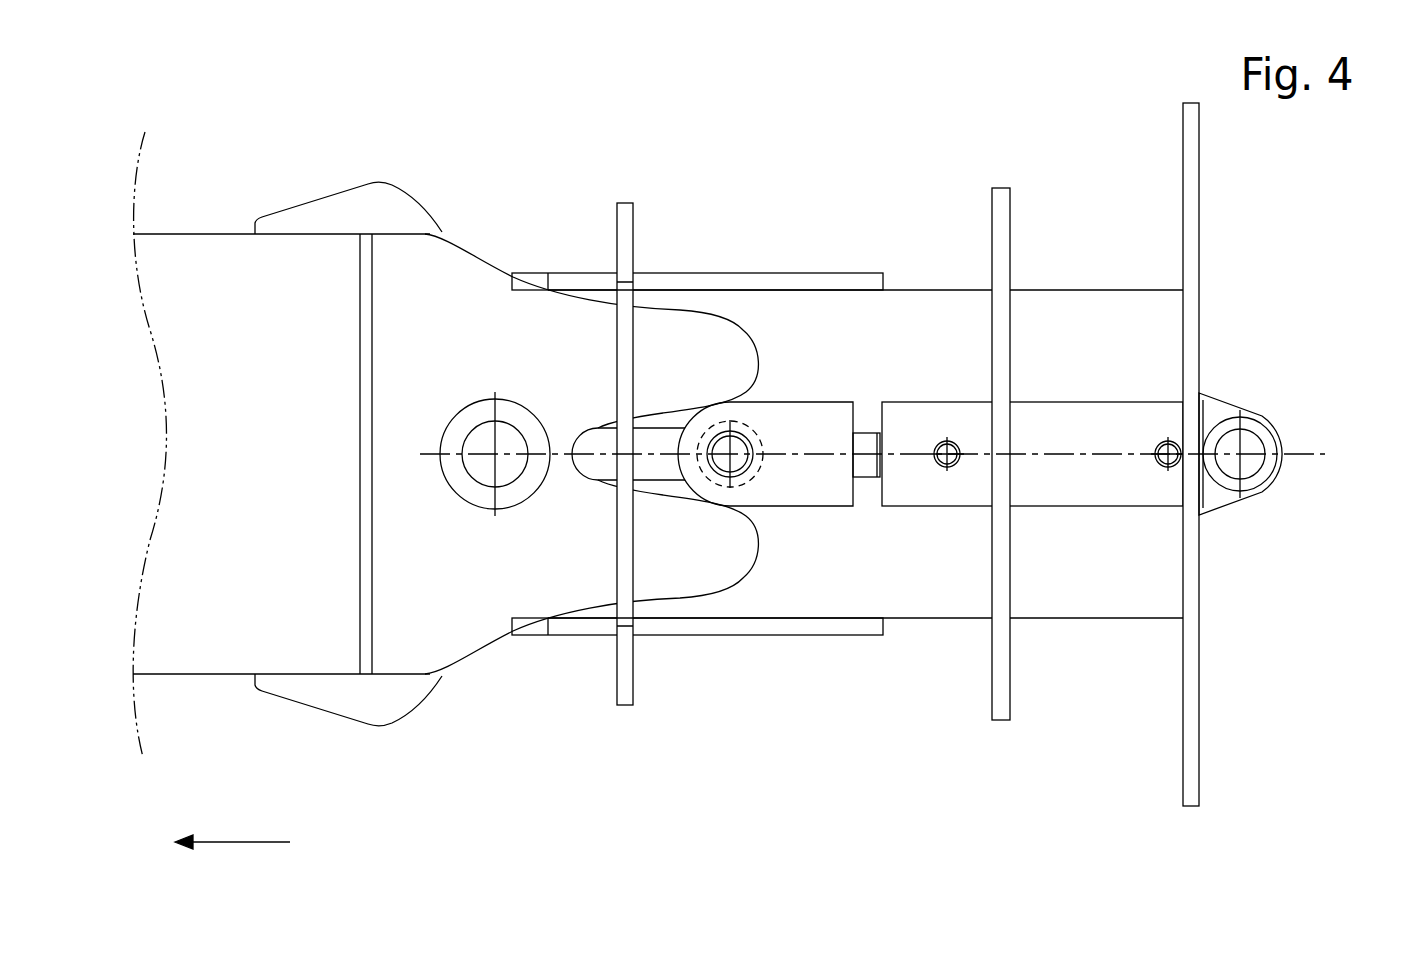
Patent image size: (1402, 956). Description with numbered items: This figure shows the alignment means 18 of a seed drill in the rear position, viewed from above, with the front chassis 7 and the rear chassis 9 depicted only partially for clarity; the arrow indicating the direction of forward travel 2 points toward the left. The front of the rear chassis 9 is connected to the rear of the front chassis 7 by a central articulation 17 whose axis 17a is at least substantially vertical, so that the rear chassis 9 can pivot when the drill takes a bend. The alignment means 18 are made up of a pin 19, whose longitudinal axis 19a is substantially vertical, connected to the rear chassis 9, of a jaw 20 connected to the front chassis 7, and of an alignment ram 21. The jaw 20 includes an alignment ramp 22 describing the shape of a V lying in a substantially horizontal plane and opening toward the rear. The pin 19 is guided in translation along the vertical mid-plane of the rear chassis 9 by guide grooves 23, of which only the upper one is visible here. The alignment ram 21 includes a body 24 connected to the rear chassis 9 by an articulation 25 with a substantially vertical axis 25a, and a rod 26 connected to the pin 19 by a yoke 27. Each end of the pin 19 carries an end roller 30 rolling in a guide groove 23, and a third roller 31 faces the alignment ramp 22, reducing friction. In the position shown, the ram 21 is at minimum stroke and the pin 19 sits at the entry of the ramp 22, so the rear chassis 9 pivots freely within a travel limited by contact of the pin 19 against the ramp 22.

The direction of forward travel 2 is at (222, 840).
The front chassis 7 is at (162, 232).
The rear chassis 9 is at (1070, 290).
The central articulation 17 is at (477, 433).
The axis 17a is at (495, 454).
The alignment means 18 is at (829, 235).
The pin 19 is at (787, 458).
The longitudinal axis 19a is at (733, 457).
The jaw 20 is at (506, 410).
The alignment ram 21 is at (873, 454).
The alignment ramp 22 is at (663, 413).
The guide grooves 23 is at (636, 480).
The body 24 is at (1070, 400).
The articulation 25 is at (1282, 433).
The axis 25a is at (1243, 455).
The rod 26 is at (863, 477).
The yoke 27 is at (843, 400).
The end roller 30 is at (752, 437).
The third roller 31 is at (703, 477).